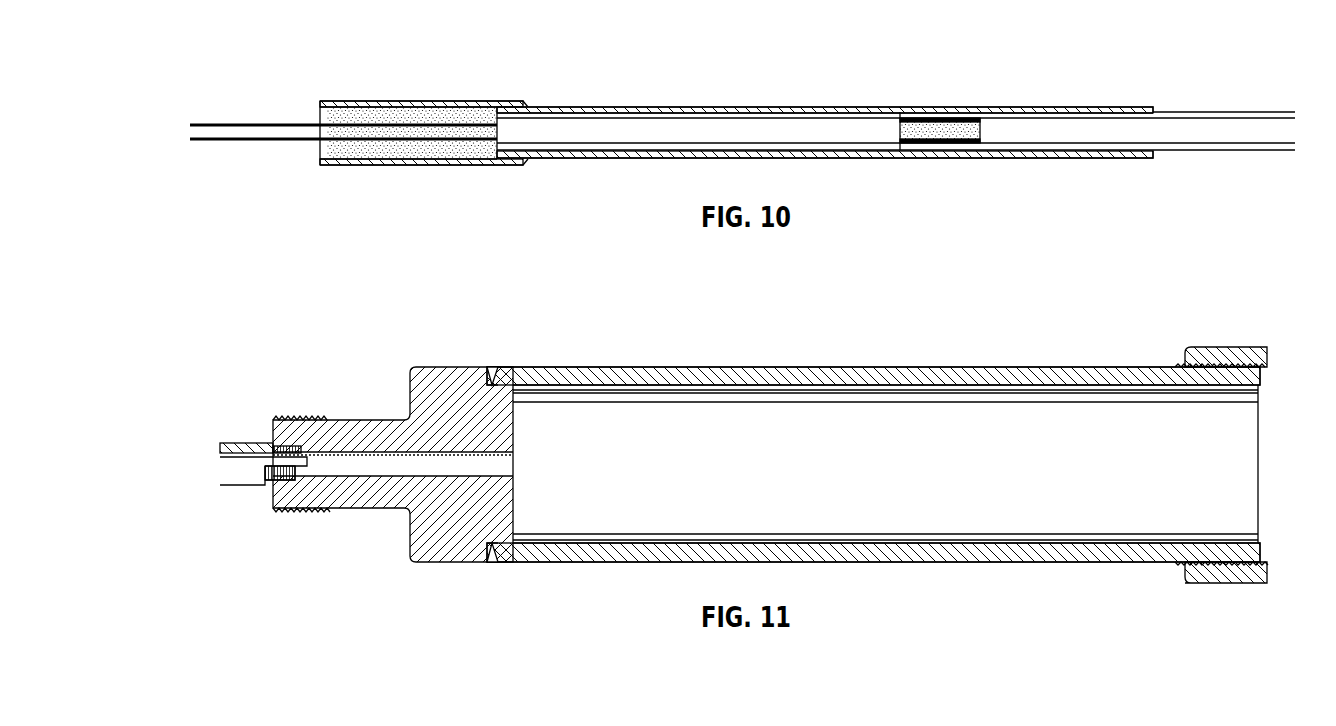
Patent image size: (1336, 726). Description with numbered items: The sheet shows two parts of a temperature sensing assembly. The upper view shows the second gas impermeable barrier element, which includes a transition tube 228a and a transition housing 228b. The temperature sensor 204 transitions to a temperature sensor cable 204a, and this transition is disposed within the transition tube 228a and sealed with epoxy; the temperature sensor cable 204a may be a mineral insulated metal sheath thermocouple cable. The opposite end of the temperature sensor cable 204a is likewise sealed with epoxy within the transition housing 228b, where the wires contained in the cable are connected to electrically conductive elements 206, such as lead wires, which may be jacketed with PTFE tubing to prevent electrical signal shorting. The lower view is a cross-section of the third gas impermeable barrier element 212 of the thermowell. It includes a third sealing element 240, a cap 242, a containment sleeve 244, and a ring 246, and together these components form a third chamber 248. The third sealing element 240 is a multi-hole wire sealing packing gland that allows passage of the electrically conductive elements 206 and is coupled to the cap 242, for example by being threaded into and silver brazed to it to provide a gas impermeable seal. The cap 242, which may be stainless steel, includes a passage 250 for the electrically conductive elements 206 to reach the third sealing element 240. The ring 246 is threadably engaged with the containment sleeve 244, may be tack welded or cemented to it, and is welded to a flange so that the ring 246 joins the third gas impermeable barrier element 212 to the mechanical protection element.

In FIG. 10, the temperature sensor 204 is at (1247, 112).
In FIG. 10, the temperature sensor cable 204a is at (820, 130).
In FIG. 10, the electrically conductive elements 206 is at (242, 138).
In FIG. 10, the transition tube 228a is at (640, 106).
In FIG. 10, the transition housing 228b is at (407, 100).
In FIG. 11, the third gas impermeable barrier element 212 is at (488, 333).
In FIG. 11, the third sealing element 240 is at (244, 443).
In FIG. 11, the cap 242 is at (366, 420).
In FIG. 11, the containment sleeve 244 is at (768, 367).
In FIG. 11, the ring 246 is at (1224, 347).
In FIG. 11, the third chamber 248 is at (868, 476).
In FIG. 11, the passage 250 is at (396, 465).